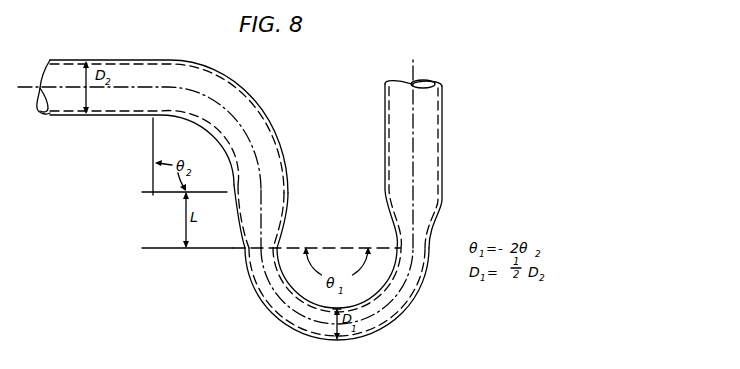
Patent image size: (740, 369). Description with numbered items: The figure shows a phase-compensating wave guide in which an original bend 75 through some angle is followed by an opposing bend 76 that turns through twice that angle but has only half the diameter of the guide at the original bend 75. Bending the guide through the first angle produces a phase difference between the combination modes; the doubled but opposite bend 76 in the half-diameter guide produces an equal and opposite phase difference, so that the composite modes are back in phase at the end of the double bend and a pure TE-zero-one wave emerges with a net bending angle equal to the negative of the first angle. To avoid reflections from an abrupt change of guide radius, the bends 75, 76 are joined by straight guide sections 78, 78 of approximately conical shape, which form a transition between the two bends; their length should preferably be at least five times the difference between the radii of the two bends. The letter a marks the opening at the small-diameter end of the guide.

The original bend 75 is at (262, 112).
The opposing bend 76 is at (398, 322).
The straight guide sections 78 is at (287, 215).
The bore opening at tube end a is at (425, 78).